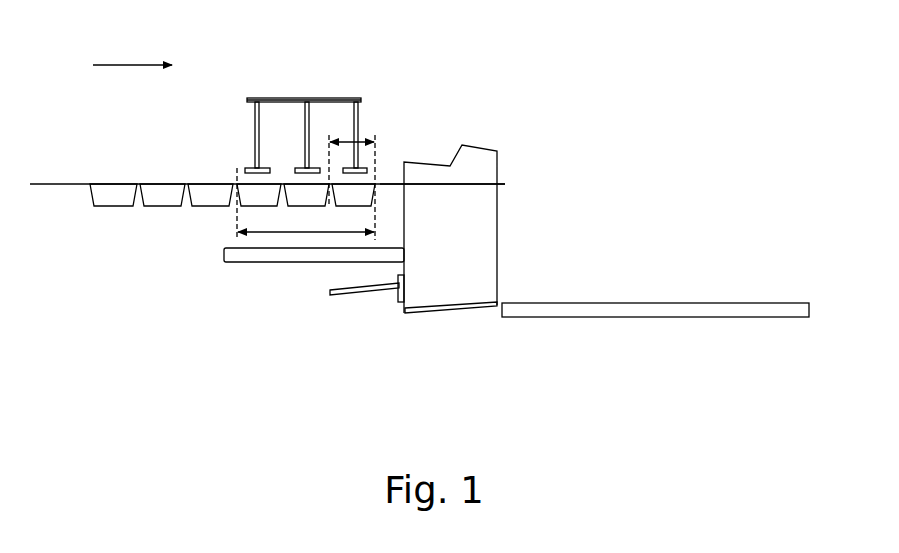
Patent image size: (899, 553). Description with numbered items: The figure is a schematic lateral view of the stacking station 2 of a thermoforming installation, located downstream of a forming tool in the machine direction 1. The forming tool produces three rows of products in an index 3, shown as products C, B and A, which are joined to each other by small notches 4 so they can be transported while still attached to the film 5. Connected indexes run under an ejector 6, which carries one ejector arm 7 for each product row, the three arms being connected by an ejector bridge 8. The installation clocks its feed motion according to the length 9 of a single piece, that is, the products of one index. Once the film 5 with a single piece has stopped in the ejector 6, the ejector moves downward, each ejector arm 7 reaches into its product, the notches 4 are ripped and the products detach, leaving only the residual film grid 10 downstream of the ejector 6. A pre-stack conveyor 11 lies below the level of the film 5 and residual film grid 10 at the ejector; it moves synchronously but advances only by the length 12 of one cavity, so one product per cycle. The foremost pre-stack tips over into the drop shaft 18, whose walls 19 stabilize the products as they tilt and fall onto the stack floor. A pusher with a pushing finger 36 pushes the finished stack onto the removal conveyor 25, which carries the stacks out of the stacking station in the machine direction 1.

The machine direction 1 is at (132, 52).
The stacking station 2 is at (444, 73).
The index 3 is at (126, 209).
The notches 4 is at (137, 184).
The film 5 is at (60, 184).
The ejector 6 is at (342, 96).
The ejector arm 7 is at (262, 122).
The ejector bridge 8 is at (293, 97).
The length of a single piece 9 is at (236, 242).
The residual film grid 10 is at (385, 183).
The pre-stack conveyor 11 is at (279, 255).
The length of a cavity 12 is at (361, 134).
The drop shaft 18 is at (488, 213).
The walls 19 is at (453, 293).
The removal conveyor 25 is at (643, 303).
The pushing finger 36 is at (402, 305).